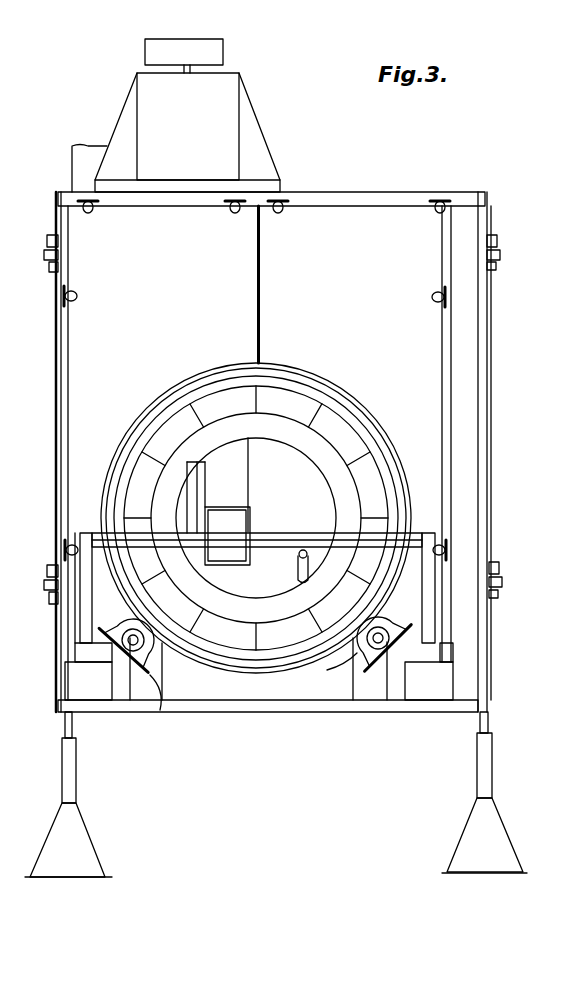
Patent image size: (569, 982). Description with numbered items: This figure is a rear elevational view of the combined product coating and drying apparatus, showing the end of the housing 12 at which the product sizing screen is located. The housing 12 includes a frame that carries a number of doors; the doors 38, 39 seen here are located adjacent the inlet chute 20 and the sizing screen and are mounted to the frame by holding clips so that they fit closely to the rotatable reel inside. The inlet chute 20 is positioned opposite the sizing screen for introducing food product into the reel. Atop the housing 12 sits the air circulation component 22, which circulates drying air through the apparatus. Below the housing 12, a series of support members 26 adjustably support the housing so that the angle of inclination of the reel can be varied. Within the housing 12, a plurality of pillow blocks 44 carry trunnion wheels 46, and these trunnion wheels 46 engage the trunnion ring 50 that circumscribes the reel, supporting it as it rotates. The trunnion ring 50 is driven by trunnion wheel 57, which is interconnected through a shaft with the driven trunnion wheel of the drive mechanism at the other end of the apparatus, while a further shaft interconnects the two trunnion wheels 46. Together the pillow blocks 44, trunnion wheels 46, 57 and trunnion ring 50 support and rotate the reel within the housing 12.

The housing 12 is at (485, 188).
The inlet chute 20 is at (252, 472).
The air circulation component 22 is at (250, 78).
The support members 26 is at (60, 770).
The door 38 is at (80, 225).
The door 39 is at (344, 213).
The pillow blocks 44 is at (145, 672).
The trunnion wheels 46 is at (253, 681).
The trunnion ring 50 is at (302, 367).
The trunnion wheel 57 is at (170, 650).